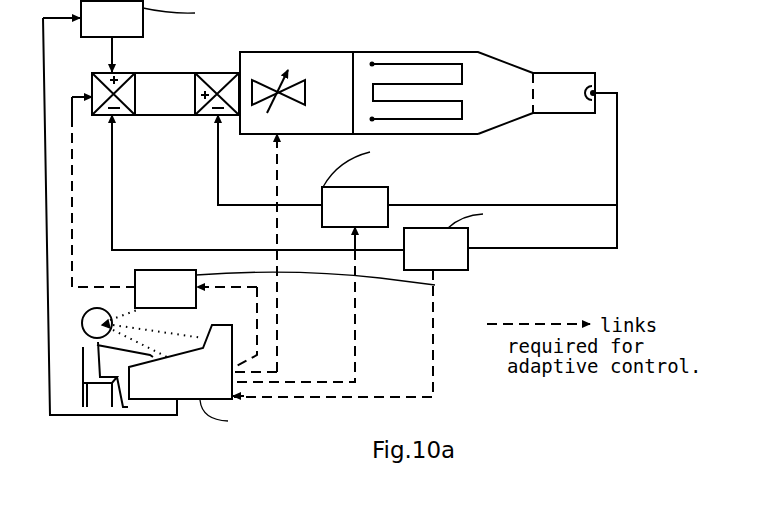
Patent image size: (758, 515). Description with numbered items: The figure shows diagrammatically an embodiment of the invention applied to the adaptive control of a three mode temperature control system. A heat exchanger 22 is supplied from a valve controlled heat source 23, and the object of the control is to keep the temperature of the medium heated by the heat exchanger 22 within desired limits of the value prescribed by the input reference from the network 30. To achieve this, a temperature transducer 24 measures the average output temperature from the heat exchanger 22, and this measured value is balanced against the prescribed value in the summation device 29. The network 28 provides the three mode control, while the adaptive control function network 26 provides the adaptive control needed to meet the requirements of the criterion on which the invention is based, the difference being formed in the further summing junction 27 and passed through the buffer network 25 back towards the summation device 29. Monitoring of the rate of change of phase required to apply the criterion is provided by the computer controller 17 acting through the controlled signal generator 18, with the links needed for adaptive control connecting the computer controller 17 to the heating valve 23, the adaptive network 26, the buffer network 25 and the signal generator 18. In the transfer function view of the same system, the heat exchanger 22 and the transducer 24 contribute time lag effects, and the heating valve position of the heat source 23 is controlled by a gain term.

The computer controller 17 is at (233, 378).
The controlled signal generator 18 is at (385, 295).
The heat exchanger 22 is at (443, 93).
The valve controlled heat source 23 is at (296, 93).
The temperature transducer 24 is at (583, 89).
The buffer network 25 is at (491, 236).
The adaptive control function network 26 is at (441, 185).
The summing junction 27 is at (217, 94).
The 3 mode controller 28 is at (165, 94).
The summation device 29 is at (114, 94).
The input reference network 30 is at (255, 19).